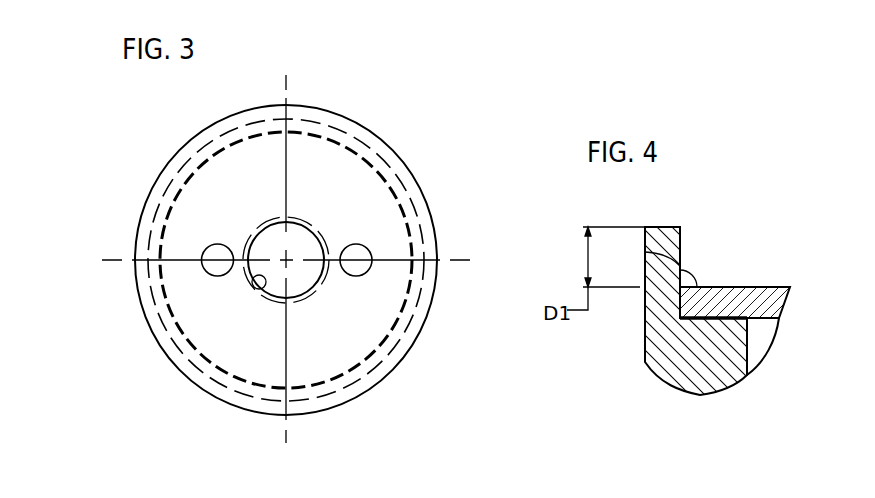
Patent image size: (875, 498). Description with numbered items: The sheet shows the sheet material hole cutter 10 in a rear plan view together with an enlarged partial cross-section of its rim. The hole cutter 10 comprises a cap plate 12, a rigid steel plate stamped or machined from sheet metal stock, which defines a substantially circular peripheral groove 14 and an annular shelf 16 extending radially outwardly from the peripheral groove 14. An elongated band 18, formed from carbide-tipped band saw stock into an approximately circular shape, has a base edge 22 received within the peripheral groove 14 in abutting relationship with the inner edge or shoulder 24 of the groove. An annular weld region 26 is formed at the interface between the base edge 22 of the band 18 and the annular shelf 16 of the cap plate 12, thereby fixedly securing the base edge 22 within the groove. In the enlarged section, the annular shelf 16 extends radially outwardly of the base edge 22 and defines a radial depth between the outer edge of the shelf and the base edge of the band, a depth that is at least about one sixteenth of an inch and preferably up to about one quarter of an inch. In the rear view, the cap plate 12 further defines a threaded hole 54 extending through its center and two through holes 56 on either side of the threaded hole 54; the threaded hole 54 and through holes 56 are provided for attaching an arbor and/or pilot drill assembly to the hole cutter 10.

In FIG. 3, the sheet material hole cutter 10 is at (429, 146).
In FIG. 3, the cap plate 12 is at (206, 128).
In FIG. 4, the cap plate 12 is at (645, 340).
In FIG. 3, the peripheral groove 14 is at (235, 390).
In FIG. 4, the peripheral groove 14 is at (698, 298).
In FIG. 4, the annular shelf 16 is at (681, 240).
In FIG. 3, the band 18 is at (198, 367).
In FIG. 4, the base edge 22 is at (698, 286).
In FIG. 4, the shoulder 24 is at (724, 316).
In FIG. 4, the annular weld region 26 is at (645, 252).
In FIG. 3, the threaded hole 54 is at (265, 296).
In FIG. 3, the through holes 56 is at (370, 250).